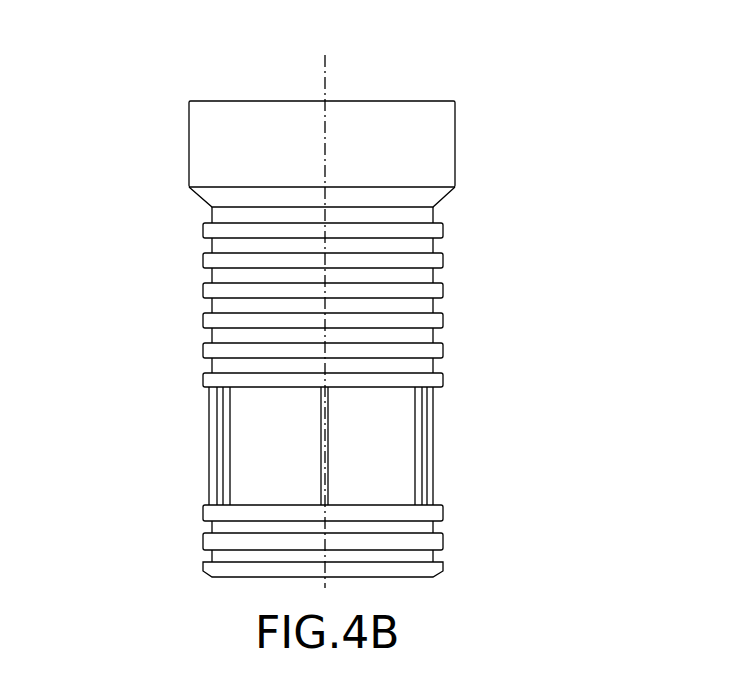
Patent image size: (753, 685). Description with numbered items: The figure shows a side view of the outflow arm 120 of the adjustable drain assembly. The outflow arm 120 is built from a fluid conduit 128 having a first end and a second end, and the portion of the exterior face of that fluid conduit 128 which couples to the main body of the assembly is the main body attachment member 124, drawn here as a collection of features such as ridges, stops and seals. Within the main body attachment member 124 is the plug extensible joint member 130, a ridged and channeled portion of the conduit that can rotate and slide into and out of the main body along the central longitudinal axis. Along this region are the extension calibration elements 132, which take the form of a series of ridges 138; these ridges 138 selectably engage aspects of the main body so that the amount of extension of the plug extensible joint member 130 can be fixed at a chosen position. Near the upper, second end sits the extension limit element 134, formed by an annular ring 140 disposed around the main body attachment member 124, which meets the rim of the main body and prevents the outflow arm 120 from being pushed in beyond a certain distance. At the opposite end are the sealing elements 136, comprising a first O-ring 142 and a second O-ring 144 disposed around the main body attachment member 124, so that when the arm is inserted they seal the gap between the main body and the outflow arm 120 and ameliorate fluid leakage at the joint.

The outflow arm 120 is at (572, 72).
The main body attachment member 124 is at (635, 97).
The fluid conduit 128 is at (433, 437).
The plug extensible joint member 130 is at (115, 333).
The extension calibration elements 132 is at (555, 248).
The extension limit element 134 is at (455, 176).
The sealing elements 136 is at (555, 522).
The ridges 138 is at (443, 259).
The annular ring 140 is at (390, 162).
The first O-ring 142 is at (443, 567).
The second O-ring 144 is at (443, 541).